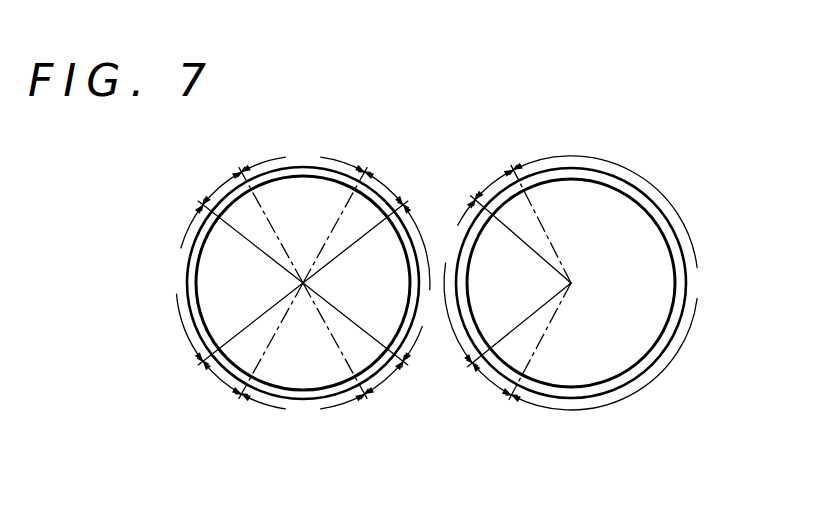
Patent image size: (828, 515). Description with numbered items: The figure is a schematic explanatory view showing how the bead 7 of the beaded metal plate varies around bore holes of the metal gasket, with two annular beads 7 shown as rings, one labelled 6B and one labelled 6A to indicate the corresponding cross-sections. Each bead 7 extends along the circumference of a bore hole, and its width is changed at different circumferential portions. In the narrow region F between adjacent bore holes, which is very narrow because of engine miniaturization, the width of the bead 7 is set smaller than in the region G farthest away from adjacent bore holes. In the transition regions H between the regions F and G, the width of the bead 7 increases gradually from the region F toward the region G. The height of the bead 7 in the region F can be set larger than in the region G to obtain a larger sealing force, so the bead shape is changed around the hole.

The bead 7 is at (340, 170).
The cross-section of ring shown in FIG. 6A is at (643, 287).
The cross-section of ring shown in FIG. 6B is at (390, 287).